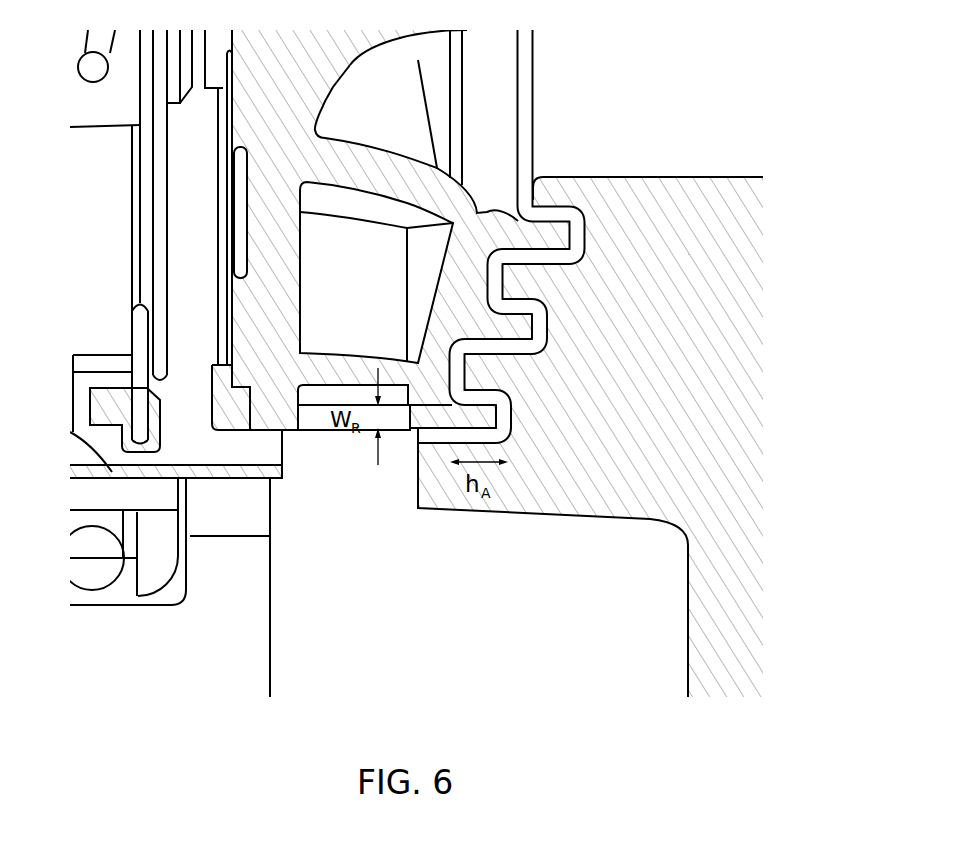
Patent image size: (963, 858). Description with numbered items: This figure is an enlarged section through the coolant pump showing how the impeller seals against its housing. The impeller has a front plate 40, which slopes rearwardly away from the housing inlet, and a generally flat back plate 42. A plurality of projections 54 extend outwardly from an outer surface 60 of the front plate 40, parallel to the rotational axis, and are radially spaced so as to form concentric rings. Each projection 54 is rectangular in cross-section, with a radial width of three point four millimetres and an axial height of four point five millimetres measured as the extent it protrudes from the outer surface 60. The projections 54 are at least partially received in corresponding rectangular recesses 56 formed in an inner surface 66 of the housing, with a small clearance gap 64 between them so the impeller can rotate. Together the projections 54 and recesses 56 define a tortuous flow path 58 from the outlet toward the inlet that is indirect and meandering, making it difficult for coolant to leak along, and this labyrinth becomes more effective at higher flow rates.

The front plate 40 is at (430, 490).
The back plate 42 is at (243, 452).
The projections 54 is at (539, 228).
The recesses 56 is at (518, 288).
The tortuous flow path 58 is at (580, 245).
The outer surface 60 is at (455, 368).
The clearance gap 64 is at (583, 227).
The inner surface 66 is at (562, 258).